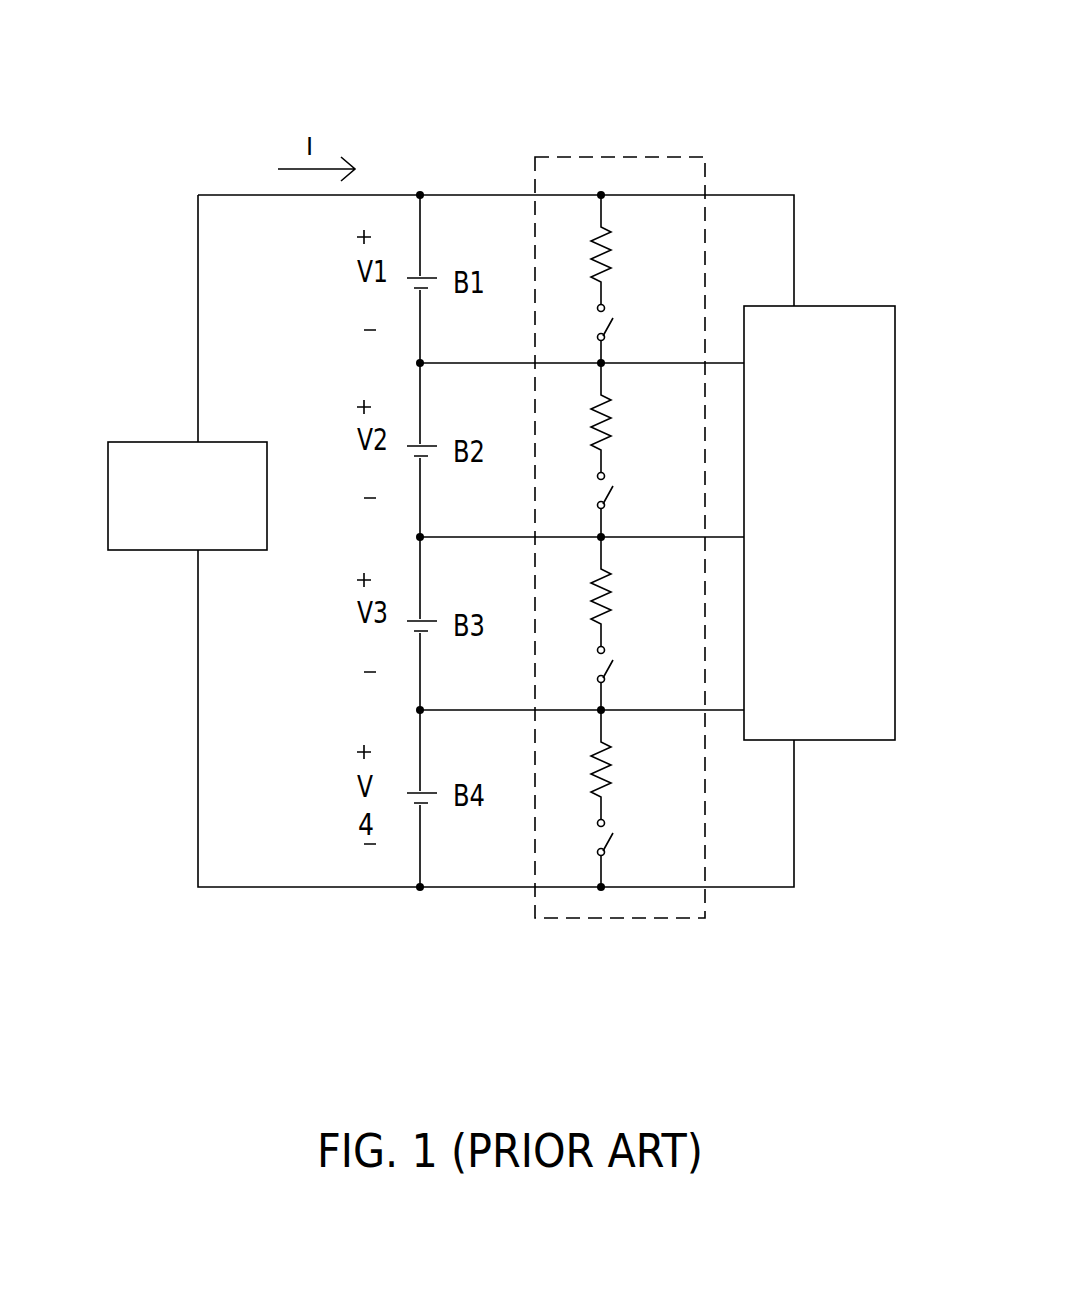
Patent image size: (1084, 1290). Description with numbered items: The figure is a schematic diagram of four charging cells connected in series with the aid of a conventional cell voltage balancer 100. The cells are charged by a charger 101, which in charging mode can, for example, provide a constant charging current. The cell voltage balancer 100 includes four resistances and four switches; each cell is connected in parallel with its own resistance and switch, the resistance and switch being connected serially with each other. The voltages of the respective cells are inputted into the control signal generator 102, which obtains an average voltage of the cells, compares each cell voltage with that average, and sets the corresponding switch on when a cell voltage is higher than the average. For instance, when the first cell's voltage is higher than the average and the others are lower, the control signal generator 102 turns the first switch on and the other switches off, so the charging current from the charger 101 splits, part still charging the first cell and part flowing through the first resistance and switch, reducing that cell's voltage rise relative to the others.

The cell voltage balancer 100 is at (632, 157).
The charger 101 is at (168, 442).
The control signal generator 102 is at (895, 452).